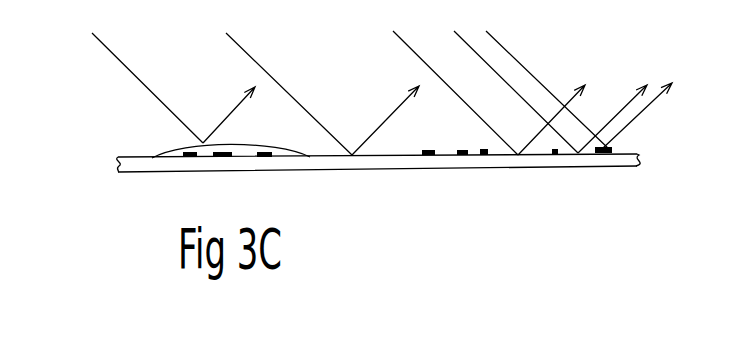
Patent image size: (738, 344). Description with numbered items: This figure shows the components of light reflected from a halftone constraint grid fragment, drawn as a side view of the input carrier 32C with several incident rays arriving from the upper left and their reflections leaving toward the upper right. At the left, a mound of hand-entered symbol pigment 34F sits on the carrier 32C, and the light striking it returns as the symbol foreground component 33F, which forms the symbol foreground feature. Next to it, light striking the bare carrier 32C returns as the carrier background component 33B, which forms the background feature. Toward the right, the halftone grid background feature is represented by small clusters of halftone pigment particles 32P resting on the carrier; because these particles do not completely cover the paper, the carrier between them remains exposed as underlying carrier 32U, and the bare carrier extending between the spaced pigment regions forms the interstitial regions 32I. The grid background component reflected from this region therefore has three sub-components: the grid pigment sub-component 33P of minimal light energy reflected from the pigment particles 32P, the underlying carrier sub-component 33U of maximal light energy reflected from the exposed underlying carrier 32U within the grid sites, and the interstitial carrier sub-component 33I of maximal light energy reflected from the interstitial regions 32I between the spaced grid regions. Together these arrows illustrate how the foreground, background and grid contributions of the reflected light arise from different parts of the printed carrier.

The carrier 32C is at (202, 165).
The interstitial regions 32I is at (505, 157).
The exposed underlying carrier 32U is at (568, 156).
The halftone pigment particles 32P is at (484, 148).
The hand-entered symbol pigment 34F is at (185, 147).
The symbol foreground component 33F is at (233, 103).
The carrier background component 33B is at (396, 102).
The interstitial carrier sub-component 33I is at (570, 92).
The underlying carrier sub-component 33U is at (630, 93).
The grid pigment sub-component 33P is at (673, 93).